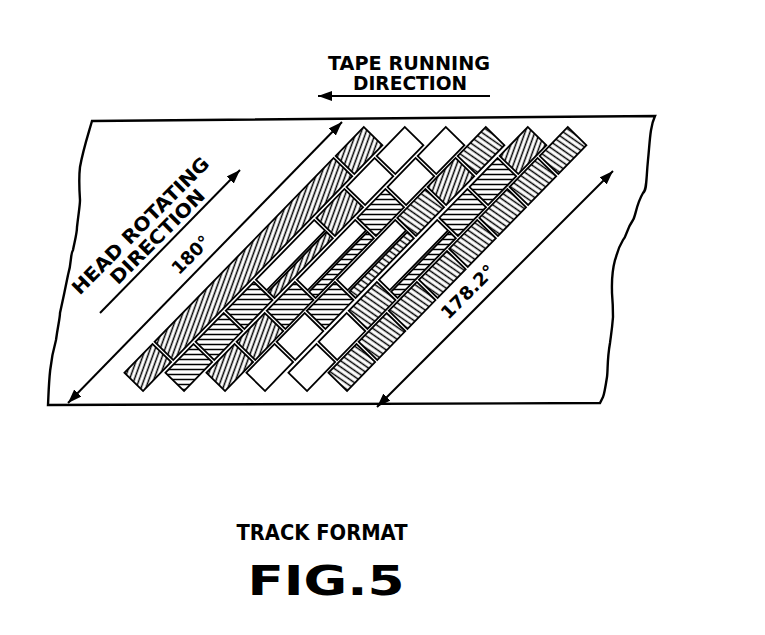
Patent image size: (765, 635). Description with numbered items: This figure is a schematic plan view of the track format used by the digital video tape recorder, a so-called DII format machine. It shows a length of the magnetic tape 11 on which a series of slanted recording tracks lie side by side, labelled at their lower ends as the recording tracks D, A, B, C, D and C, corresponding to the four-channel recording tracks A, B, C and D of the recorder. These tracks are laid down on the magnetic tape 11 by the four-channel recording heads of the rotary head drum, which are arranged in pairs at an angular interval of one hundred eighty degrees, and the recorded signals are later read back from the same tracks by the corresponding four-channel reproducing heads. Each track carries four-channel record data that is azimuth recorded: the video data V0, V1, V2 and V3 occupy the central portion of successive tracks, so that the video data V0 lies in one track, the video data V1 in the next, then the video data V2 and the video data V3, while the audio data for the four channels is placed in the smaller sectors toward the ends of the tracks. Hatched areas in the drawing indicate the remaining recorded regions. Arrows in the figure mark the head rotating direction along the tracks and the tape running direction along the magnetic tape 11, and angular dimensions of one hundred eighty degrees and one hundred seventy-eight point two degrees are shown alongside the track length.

The magnetic tape 11 is at (613, 317).
The recording track D is at (324, 292).
The recording track A is at (288, 292).
The recording track B is at (335, 292).
The recording track C is at (416, 292).
The video data V0 is at (291, 255).
The video data V1 is at (332, 255).
The video data V2 is at (372, 255).
The video data V3 is at (414, 255).